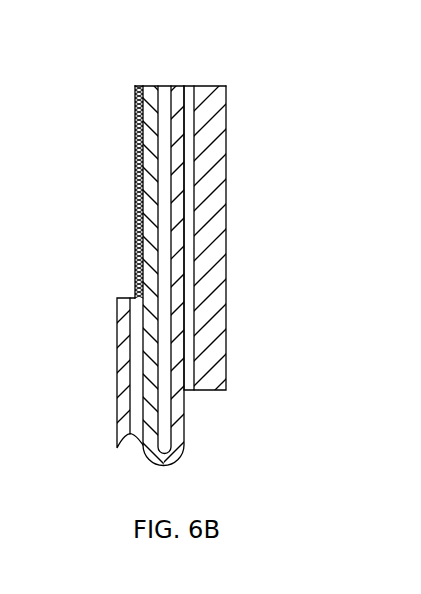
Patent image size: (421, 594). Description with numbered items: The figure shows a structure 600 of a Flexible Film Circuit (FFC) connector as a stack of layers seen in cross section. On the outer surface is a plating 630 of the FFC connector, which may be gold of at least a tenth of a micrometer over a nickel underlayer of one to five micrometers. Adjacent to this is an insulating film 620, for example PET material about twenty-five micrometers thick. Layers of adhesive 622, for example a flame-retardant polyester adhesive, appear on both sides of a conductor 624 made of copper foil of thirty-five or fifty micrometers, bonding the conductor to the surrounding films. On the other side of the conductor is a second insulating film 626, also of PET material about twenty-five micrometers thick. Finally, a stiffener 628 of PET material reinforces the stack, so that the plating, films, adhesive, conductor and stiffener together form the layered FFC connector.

The structure 600 is at (175, 46).
The insulating film 620 is at (123, 325).
The layer of adhesive 622 is at (132, 368).
The conductor 624 is at (136, 406).
The insulating film 626 is at (170, 413).
The stiffener 628 is at (217, 303).
The plating 630 is at (137, 153).